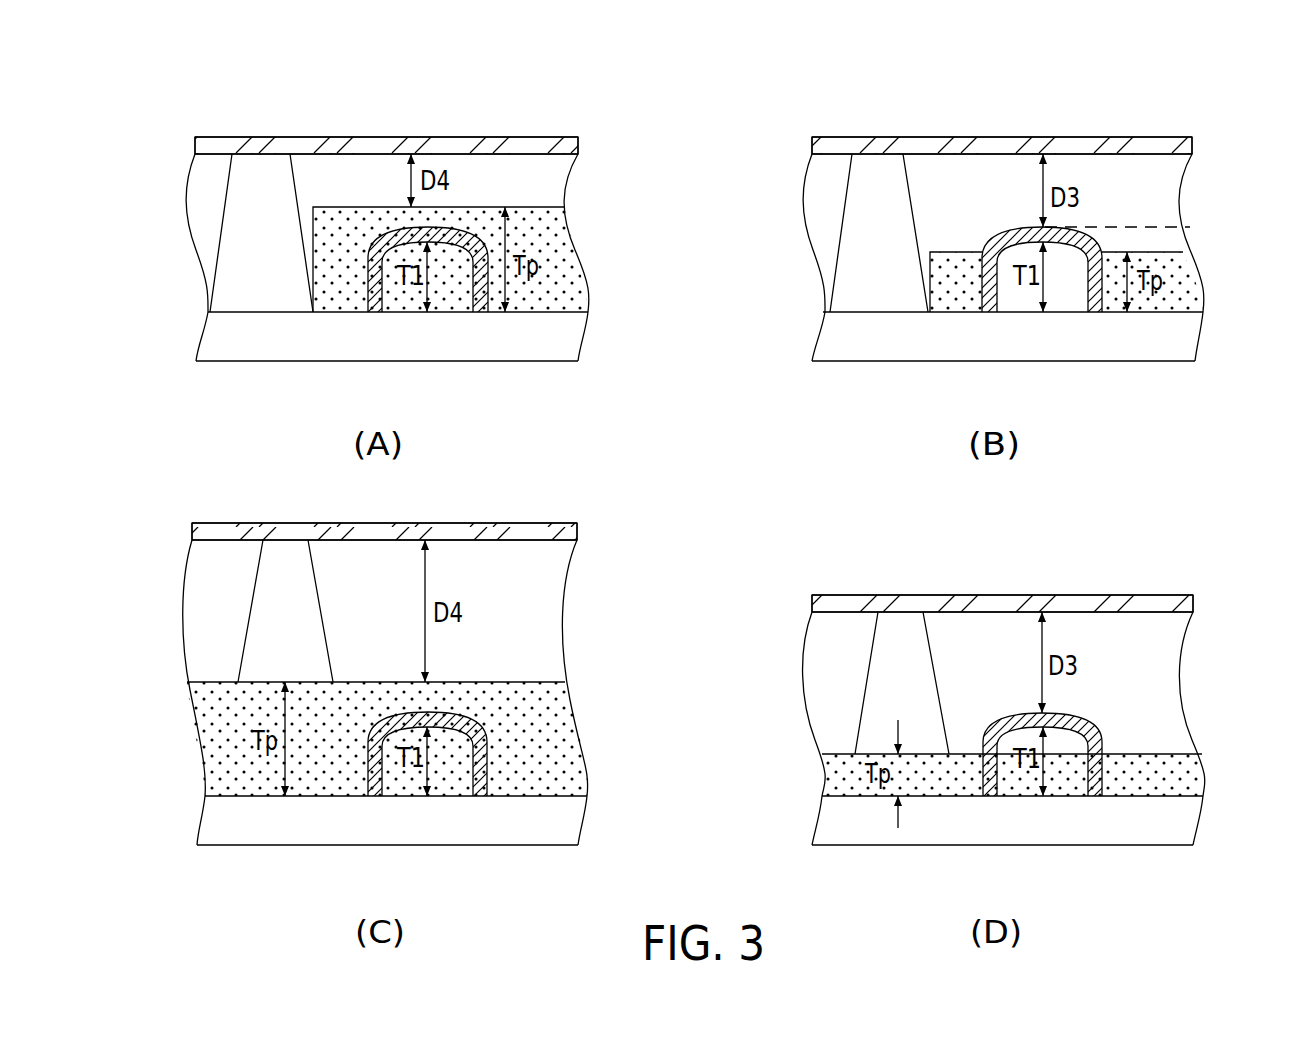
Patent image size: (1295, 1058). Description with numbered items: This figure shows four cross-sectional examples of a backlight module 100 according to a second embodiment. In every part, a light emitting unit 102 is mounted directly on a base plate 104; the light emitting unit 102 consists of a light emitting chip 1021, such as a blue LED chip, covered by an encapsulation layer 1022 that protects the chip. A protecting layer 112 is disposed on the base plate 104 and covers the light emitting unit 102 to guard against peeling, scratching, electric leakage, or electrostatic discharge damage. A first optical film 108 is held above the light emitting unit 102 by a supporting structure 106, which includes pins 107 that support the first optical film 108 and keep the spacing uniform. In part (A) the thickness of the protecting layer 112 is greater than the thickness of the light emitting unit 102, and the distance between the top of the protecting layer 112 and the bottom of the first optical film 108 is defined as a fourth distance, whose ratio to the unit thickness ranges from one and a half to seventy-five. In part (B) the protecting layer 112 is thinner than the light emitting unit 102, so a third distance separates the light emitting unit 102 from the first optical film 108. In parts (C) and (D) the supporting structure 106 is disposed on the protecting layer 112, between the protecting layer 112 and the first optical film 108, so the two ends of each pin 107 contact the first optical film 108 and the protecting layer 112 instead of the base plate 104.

The backlight module 100 is at (517, 118).
The light emitting unit 102 is at (758, 585).
The light emitting chip 1021 is at (533, 402).
The encapsulation layer 1022 is at (474, 305).
The base plate 104 is at (573, 341).
The supporting structure 106 is at (235, 263).
The pin 107 is at (507, 454).
The first optical film 108 is at (567, 146).
The protecting layer 112 is at (568, 246).